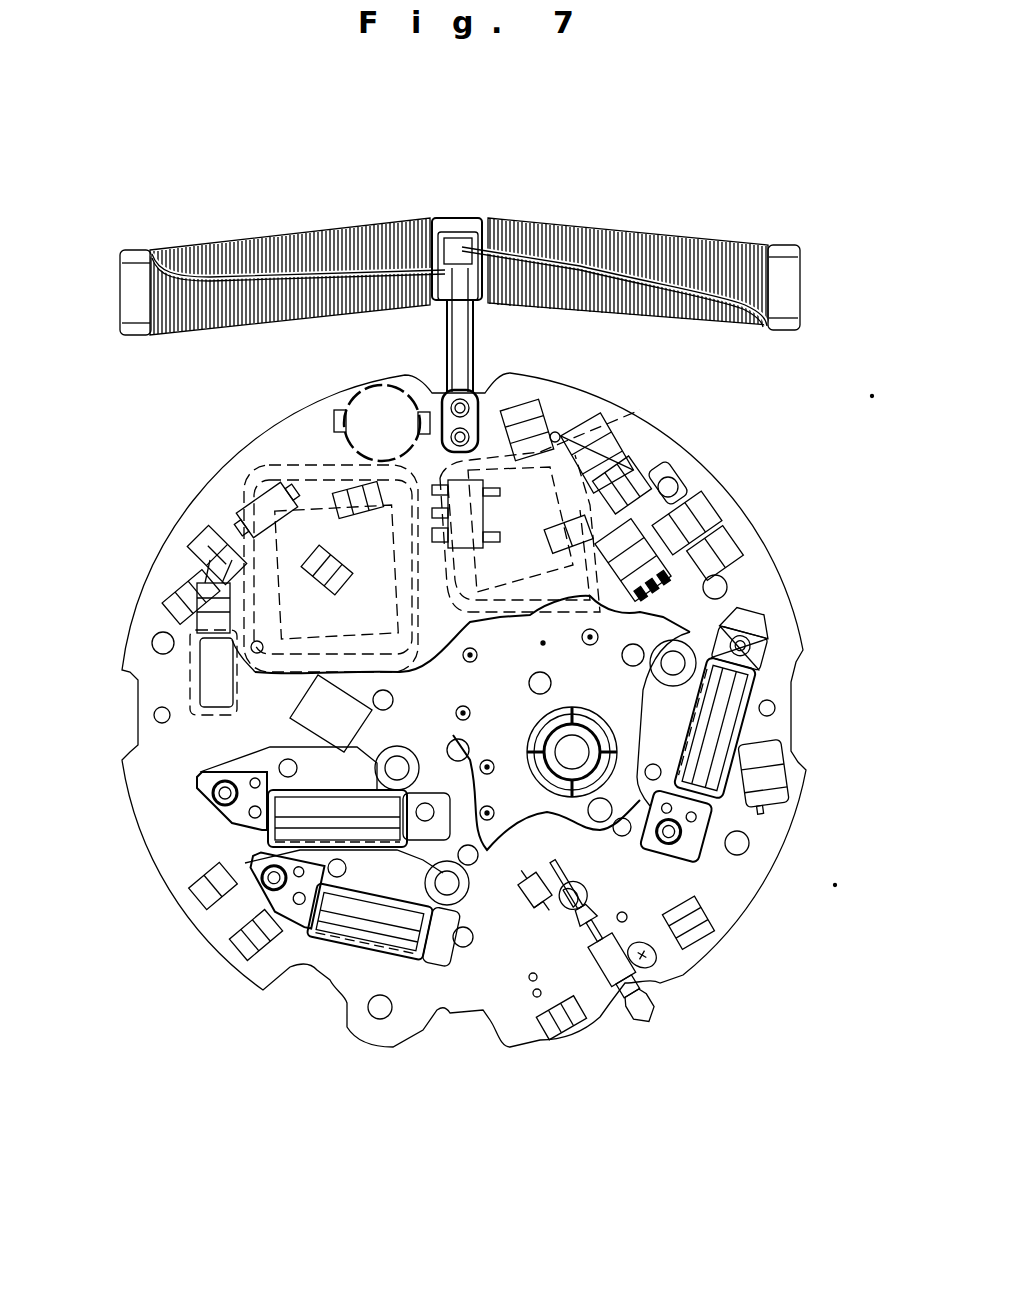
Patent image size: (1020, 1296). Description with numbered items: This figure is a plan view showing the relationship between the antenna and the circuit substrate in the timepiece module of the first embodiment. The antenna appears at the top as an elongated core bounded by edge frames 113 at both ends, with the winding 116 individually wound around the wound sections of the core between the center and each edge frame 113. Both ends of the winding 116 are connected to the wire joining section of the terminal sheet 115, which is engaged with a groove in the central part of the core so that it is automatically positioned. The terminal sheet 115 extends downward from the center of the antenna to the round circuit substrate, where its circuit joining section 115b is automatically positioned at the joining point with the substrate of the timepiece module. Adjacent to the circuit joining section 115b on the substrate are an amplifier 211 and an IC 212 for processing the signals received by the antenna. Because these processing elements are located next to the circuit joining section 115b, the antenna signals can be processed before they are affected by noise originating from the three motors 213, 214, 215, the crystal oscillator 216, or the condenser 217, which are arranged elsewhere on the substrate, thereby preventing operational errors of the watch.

The winding 116 is at (525, 216).
The edge frame 113 is at (788, 282).
The terminal sheet 115 is at (455, 335).
The circuit joining section 115b is at (520, 394).
The amplifier 211 is at (462, 494).
The IC 212 is at (535, 503).
The motor 213 is at (386, 940).
The motor 214 is at (307, 832).
The motor 215 is at (727, 725).
The crystal oscillator 216 is at (217, 680).
The condenser 217 is at (763, 778).